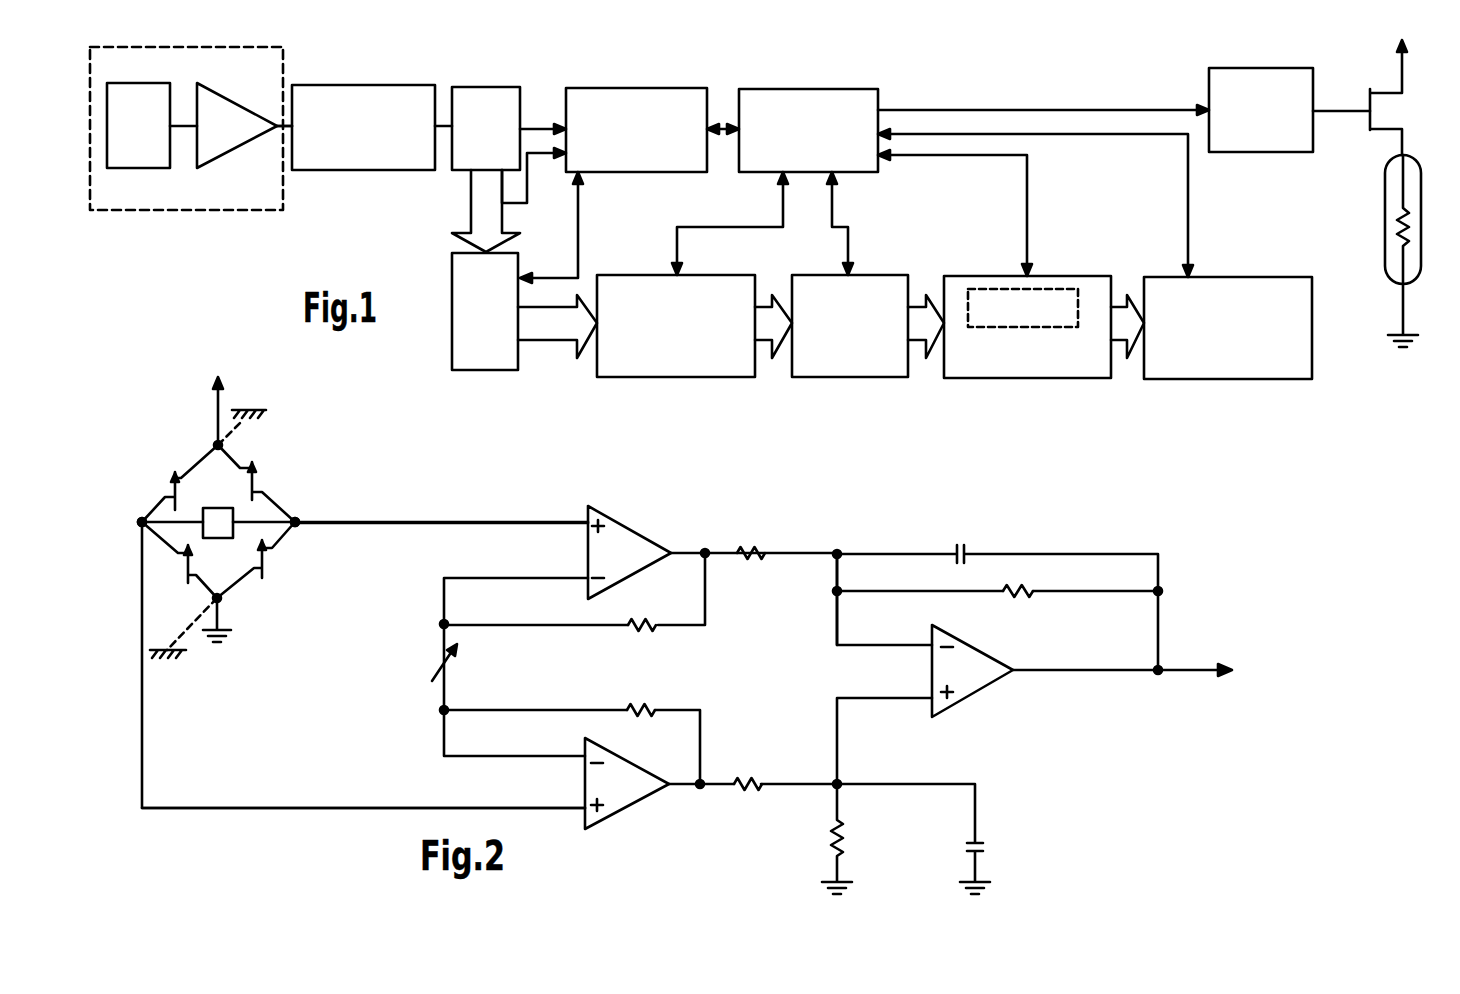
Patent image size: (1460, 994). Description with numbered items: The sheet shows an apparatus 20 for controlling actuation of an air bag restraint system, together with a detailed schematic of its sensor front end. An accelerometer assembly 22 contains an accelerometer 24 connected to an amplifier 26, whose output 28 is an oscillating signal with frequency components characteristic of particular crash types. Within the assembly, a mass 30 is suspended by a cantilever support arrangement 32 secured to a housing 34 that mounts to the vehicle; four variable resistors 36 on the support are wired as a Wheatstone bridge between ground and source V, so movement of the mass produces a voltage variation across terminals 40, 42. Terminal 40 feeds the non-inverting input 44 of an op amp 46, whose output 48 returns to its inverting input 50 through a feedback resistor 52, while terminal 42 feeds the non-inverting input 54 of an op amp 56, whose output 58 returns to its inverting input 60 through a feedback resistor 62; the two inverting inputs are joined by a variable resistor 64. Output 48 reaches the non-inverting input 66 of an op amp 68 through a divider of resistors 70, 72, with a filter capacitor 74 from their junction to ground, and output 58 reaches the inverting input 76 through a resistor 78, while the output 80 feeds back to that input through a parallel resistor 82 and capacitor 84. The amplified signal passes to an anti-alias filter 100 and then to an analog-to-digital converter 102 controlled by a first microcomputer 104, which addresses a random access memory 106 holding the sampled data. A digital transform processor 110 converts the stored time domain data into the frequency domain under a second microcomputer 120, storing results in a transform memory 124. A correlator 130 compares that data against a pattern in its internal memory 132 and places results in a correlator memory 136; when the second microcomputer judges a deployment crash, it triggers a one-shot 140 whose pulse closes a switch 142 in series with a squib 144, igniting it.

In FIG. 1, the apparatus 20 is at (1051, 69).
In FIG. 1, the accelerometer assembly 22 is at (193, 47).
In FIG. 1, the accelerometer 24 is at (148, 168).
In FIG. 2, the accelerometer 24 is at (333, 448).
In FIG. 1, the amplifier 26 is at (212, 147).
In FIG. 2, the amplifier 26 is at (933, 496).
In FIG. 1, the output 28 is at (280, 128).
In FIG. 2, the output 28 is at (1185, 668).
In FIG. 2, the mass 30 is at (217, 508).
In FIG. 2, the cantilever support arrangement 32 is at (237, 427).
In FIG. 2, the housing 34 is at (253, 407).
In FIG. 2, the variable resistors 36 is at (170, 484).
In FIG. 2, the terminal 40 is at (140, 522).
In FIG. 2, the terminal 42 is at (297, 520).
In FIG. 2, the non-inverting input 44 is at (584, 812).
In FIG. 2, the operational amplifier 46 is at (620, 797).
In FIG. 2, the output 48 is at (660, 787).
In FIG. 2, the inverting input 50 is at (584, 765).
In FIG. 2, the feedback resistor 52 is at (639, 708).
In FIG. 2, the non-inverting input 54 is at (588, 524).
In FIG. 2, the operational amplifier 56 is at (638, 531).
In FIG. 2, the output 58 is at (672, 549).
In FIG. 2, the inverting input 60 is at (587, 575).
In FIG. 2, the feedback resistor 62 is at (640, 628).
In FIG. 2, the variable resistor 64 is at (446, 662).
In FIG. 2, the non-inverting input 66 is at (932, 703).
In FIG. 2, the operational amplifier 68 is at (978, 645).
In FIG. 2, the resistor 70 is at (746, 782).
In FIG. 2, the resistor 72 is at (841, 835).
In FIG. 2, the filter capacitor 74 is at (980, 847).
In FIG. 2, the inverting input 76 is at (930, 643).
In FIG. 2, the resistor 78 is at (752, 549).
In FIG. 2, the output 80 is at (1023, 673).
In FIG. 2, the resistor 82 is at (1027, 594).
In FIG. 2, the capacitor 84 is at (961, 541).
In FIG. 1, the anti-alias filter 100 is at (380, 88).
In FIG. 1, the analog-to-digital converter 102 is at (492, 97).
In FIG. 1, the first microcomputer 104 is at (647, 97).
In FIG. 1, the random access memory 106 is at (458, 291).
In FIG. 1, the digital transform processor 110 is at (622, 280).
In FIG. 1, the second microcomputer 120 is at (815, 95).
In FIG. 1, the transform memory 124 is at (890, 274).
In FIG. 1, the correlator 130 is at (1097, 274).
In FIG. 1, the internal memory 132 is at (997, 289).
In FIG. 1, the correlator memory 136 is at (1224, 276).
In FIG. 1, the one-shot 140 is at (1282, 74).
In FIG. 1, the switch 142 is at (1370, 101).
In FIG. 1, the squib 144 is at (1404, 226).